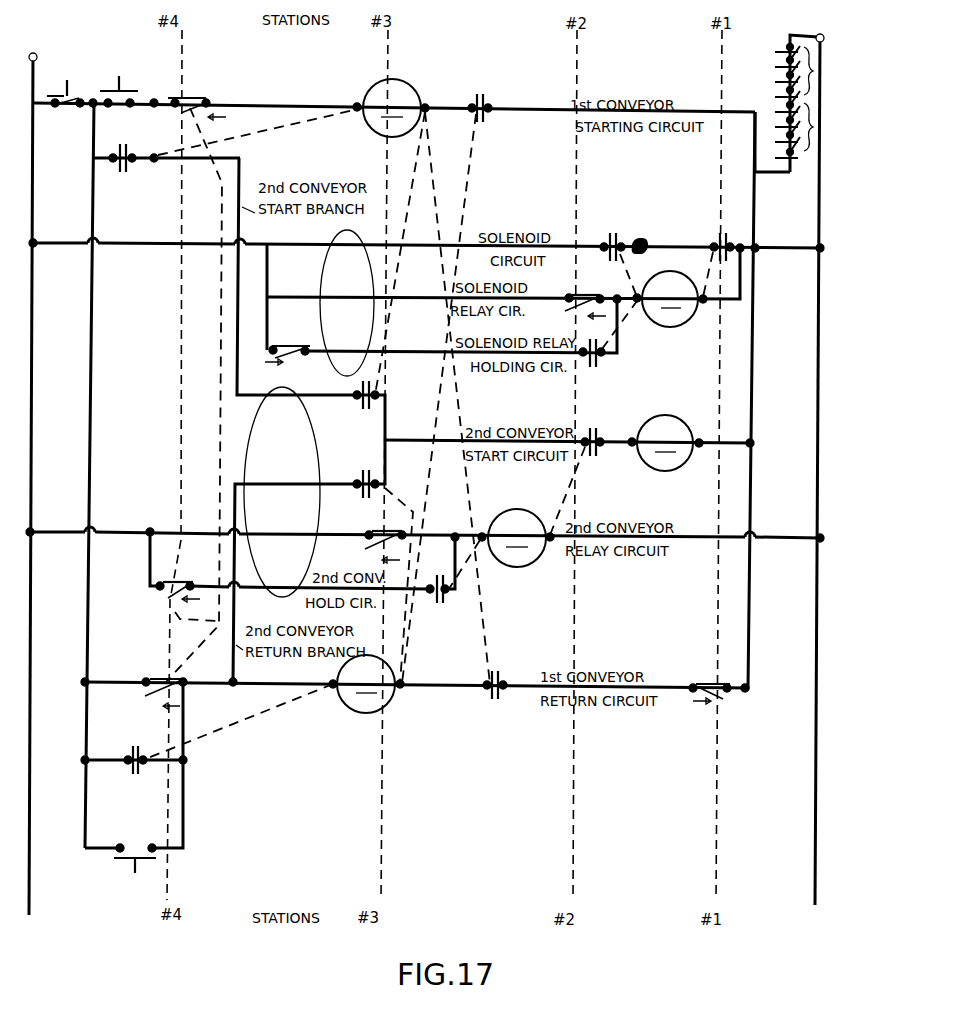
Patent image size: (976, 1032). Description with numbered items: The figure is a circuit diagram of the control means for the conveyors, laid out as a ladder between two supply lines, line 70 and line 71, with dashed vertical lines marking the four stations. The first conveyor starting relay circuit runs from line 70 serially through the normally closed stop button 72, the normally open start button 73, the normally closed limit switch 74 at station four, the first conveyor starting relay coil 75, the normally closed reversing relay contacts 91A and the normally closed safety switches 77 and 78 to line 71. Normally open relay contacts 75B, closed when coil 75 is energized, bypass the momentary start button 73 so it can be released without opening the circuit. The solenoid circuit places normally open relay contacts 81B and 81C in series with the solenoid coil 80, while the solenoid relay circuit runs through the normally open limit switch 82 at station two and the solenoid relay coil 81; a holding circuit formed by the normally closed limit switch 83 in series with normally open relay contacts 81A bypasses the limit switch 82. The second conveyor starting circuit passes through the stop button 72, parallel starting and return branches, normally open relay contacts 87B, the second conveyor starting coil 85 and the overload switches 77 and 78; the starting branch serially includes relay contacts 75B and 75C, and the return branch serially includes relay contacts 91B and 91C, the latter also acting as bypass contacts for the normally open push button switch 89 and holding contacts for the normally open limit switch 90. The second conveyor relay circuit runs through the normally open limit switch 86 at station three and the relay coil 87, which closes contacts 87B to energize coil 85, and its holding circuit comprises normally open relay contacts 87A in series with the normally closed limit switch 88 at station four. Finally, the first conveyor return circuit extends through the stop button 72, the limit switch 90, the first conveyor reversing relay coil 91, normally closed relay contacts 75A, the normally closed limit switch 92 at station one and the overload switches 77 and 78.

The line 70 is at (36, 53).
The line 71 is at (818, 36).
The stop button 72 is at (68, 107).
The start button 73 is at (112, 87).
The limit switch 74 is at (190, 96).
The 1st conveyor starting relay coil 75 is at (391, 108).
The relay contacts 75A is at (492, 700).
The relay contacts 75B is at (122, 173).
The relay contacts 75C is at (369, 410).
The safety switch 77 is at (786, 125).
The safety switch 78 is at (775, 68).
The solenoid coil 80 is at (667, 238).
The solenoid relay coil 81 is at (670, 299).
The relay contacts 81A is at (594, 368).
The relay contacts 81B is at (613, 232).
The relay contacts 81C is at (728, 209).
The limit switch 82 is at (590, 294).
The limit switch 83 is at (283, 345).
The starting coil 85 is at (691, 443).
The limit switch 86 is at (382, 533).
The relay coil 87 is at (502, 538).
The relay contacts 87A is at (438, 603).
The relay contacts 87B is at (593, 428).
The limit switch 88 is at (172, 580).
The push button switch 89 is at (139, 866).
The limit switch 90 is at (160, 678).
The 1st conveyor reversing relay coil 91 is at (366, 684).
The reversing relay contacts 91A is at (485, 122).
The relay contacts 91B is at (135, 774).
The relay contacts 91C is at (365, 471).
The limit switch 92 is at (712, 682).